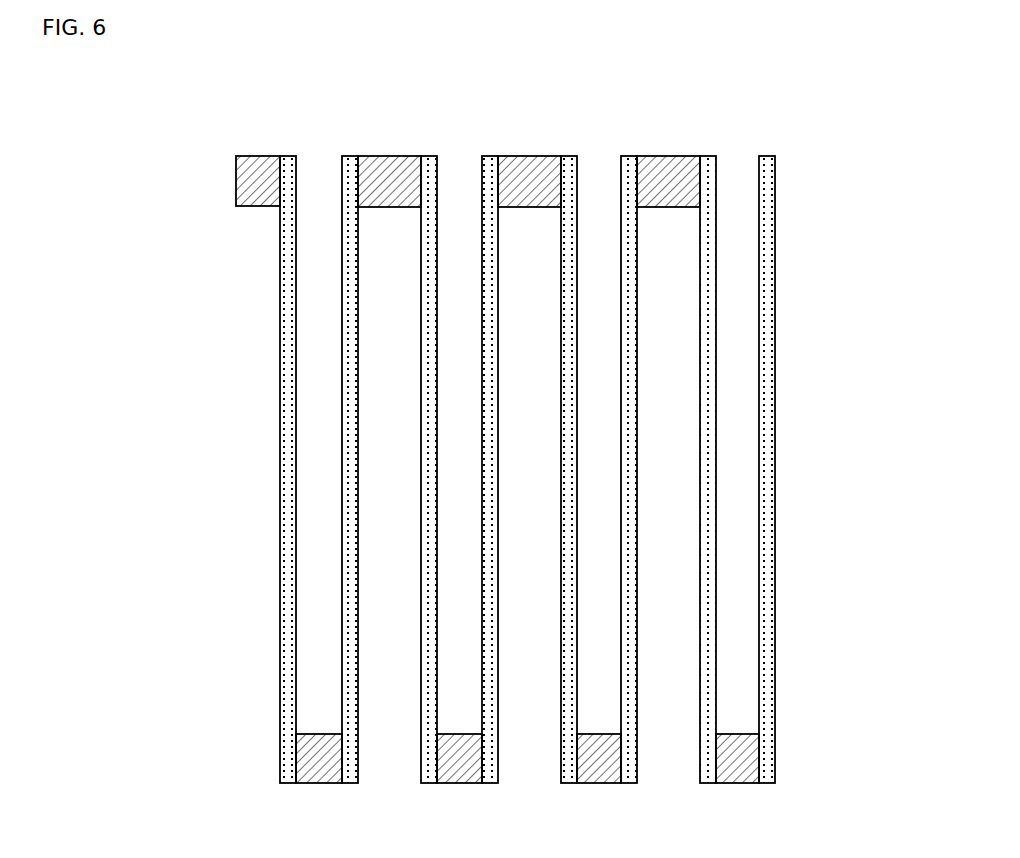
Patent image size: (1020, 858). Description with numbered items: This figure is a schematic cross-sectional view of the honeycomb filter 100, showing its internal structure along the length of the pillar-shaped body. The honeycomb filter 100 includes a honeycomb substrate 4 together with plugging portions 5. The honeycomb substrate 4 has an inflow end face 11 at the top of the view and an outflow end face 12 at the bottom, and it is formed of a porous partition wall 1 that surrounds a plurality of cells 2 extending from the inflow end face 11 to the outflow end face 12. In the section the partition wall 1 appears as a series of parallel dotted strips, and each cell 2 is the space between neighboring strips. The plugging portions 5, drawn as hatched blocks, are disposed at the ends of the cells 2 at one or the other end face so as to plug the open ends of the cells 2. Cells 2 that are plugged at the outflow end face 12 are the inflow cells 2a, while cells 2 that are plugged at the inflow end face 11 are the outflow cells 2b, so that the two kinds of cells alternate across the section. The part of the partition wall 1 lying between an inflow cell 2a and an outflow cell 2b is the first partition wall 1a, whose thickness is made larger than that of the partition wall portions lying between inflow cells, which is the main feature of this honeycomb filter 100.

The honeycomb filter 100 is at (560, 452).
The inflow end face 11 is at (468, 463).
The outflow end face 12 is at (381, 808).
The plugging portion 5 is at (527, 180).
The partition wall 1 is at (582, 437).
The first partition wall 1a is at (708, 469).
The cell 2 is at (660, 471).
The inflow cell 2a is at (599, 470).
The outflow cell 2b is at (668, 470).
The honeycomb substrate 4 is at (782, 137).